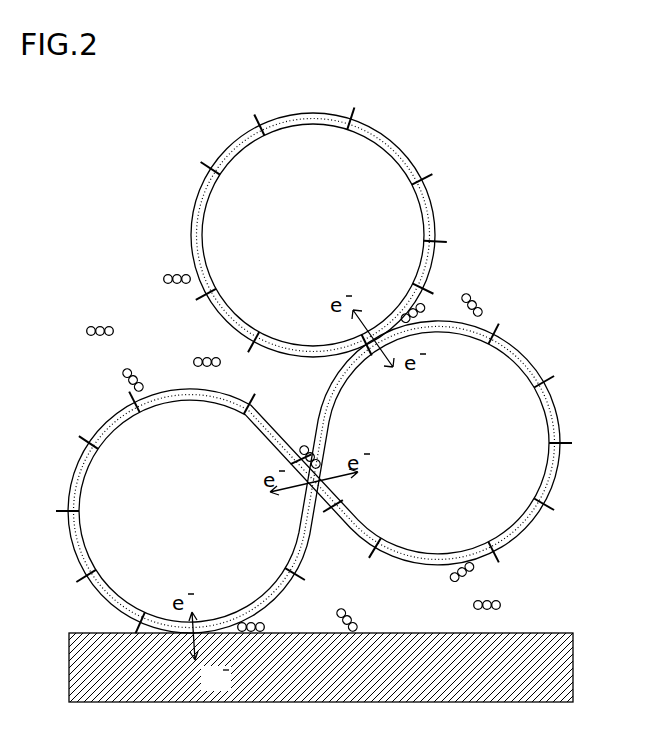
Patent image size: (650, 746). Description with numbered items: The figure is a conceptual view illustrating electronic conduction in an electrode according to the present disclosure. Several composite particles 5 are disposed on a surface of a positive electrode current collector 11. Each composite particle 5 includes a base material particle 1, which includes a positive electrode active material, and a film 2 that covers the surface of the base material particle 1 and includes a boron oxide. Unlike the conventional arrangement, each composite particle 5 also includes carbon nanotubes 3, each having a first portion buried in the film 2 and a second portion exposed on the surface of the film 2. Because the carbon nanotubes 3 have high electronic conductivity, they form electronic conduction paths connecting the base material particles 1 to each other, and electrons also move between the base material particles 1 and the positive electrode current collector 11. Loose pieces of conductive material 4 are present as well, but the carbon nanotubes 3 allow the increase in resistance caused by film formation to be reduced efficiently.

The base material particle 1 is at (363, 177).
The film 2 is at (374, 129).
The carbon nanotube 3 is at (449, 128).
The conductive material 4 is at (96, 326).
The composite particle 5 is at (320, 210).
The positive electrode current collector 11 is at (557, 632).